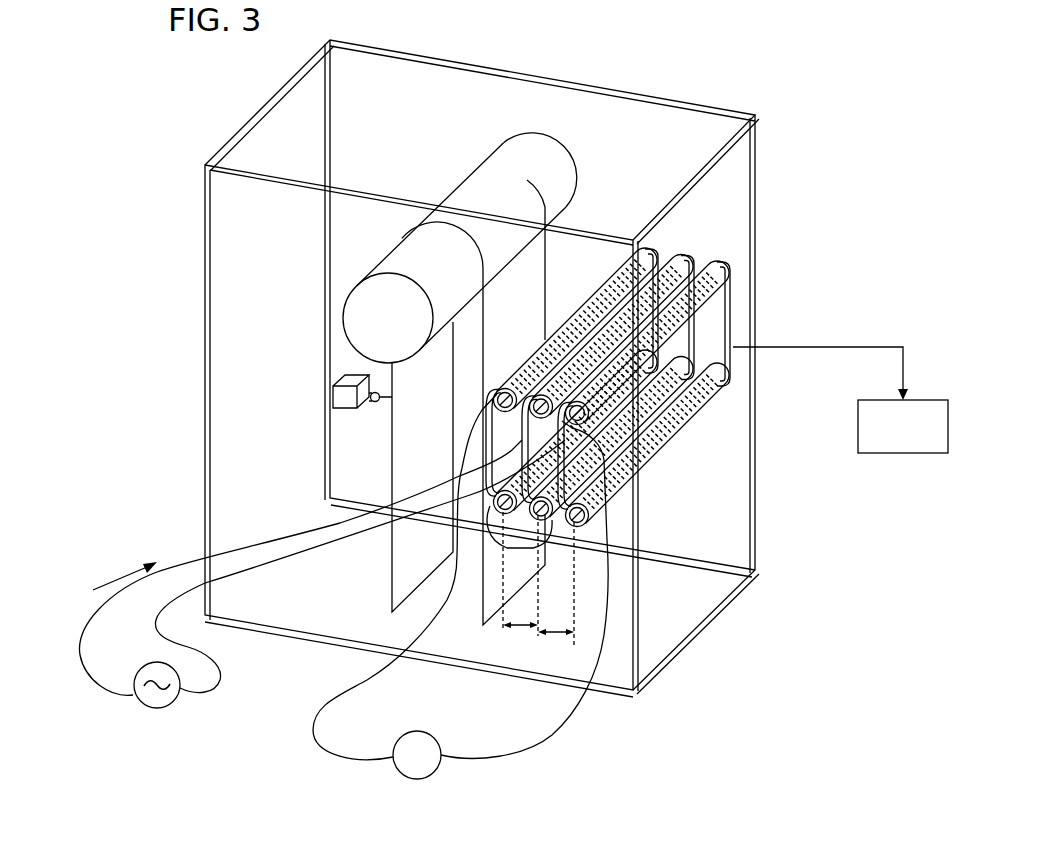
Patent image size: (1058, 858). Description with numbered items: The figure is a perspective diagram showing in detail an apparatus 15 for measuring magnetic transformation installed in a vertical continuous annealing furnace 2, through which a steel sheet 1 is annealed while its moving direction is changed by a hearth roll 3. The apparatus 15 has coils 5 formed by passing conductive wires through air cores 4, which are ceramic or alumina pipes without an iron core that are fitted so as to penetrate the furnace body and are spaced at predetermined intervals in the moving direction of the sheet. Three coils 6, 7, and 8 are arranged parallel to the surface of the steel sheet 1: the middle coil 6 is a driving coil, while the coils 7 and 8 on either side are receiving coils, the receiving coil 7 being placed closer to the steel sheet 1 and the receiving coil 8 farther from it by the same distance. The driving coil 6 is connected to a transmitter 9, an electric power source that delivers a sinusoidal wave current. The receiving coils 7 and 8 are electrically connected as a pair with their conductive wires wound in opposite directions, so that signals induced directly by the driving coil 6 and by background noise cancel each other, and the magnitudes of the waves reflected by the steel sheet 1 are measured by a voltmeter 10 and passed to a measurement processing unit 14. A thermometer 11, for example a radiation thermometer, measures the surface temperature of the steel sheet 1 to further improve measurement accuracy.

The steel sheet 1 is at (392, 447).
The annealing furnace 2 is at (205, 336).
The hearth roll 3 is at (370, 322).
The air core 4 is at (613, 408).
The coils 5 is at (840, 118).
The driving coil 6 is at (686, 255).
The receiving coil 7 is at (645, 258).
The receiving coil 8 is at (714, 271).
The transmitter 9 is at (150, 706).
The voltmeter 10 is at (428, 738).
The thermometer 11 is at (333, 392).
The measurement processing unit 14 is at (905, 456).
The apparatus for measuring magnetic transformation 15 is at (827, 81).